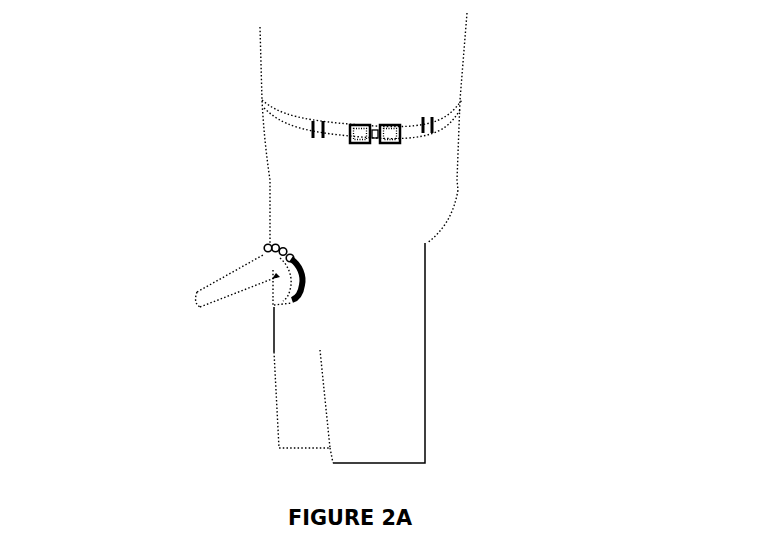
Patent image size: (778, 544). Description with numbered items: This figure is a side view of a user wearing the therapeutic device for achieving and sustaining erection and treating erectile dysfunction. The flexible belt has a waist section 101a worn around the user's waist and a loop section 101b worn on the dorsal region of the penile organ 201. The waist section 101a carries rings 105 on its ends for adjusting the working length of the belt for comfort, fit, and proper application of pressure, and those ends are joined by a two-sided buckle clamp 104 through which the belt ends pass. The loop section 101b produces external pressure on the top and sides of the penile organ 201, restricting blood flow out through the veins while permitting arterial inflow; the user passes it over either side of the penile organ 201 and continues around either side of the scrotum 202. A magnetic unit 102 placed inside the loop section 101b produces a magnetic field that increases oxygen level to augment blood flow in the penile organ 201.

The waist section 101a is at (272, 121).
The loop section 101b is at (318, 280).
The magnetic unit 102 is at (271, 256).
The buckle clamp 104 is at (404, 150).
The rings 105 is at (440, 130).
The penile organ 201 is at (211, 296).
The scrotum 202 is at (304, 303).